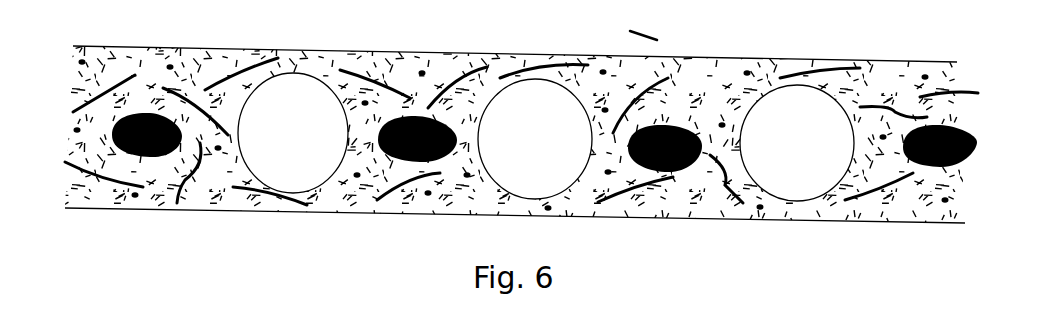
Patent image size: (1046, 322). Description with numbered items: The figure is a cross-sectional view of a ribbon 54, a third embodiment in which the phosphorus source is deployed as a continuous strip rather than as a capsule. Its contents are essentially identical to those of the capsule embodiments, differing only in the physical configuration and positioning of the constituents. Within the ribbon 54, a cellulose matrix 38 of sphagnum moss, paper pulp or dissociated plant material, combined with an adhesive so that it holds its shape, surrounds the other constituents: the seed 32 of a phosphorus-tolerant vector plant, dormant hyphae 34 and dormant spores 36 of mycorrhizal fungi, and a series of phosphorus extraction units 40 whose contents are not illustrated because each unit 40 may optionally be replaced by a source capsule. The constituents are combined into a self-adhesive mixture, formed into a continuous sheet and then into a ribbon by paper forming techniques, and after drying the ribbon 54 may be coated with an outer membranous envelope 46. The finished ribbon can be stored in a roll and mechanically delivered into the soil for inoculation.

The seed 32 is at (680, 168).
The dormant hyphae 34 is at (607, 200).
The dormant spores 36 is at (433, 195).
The cellulose matrix 38 is at (162, 190).
The phosphorus extraction unit 40 is at (317, 190).
The outer membranous envelope 46 is at (393, 52).
The ribbon 54 is at (520, 131).